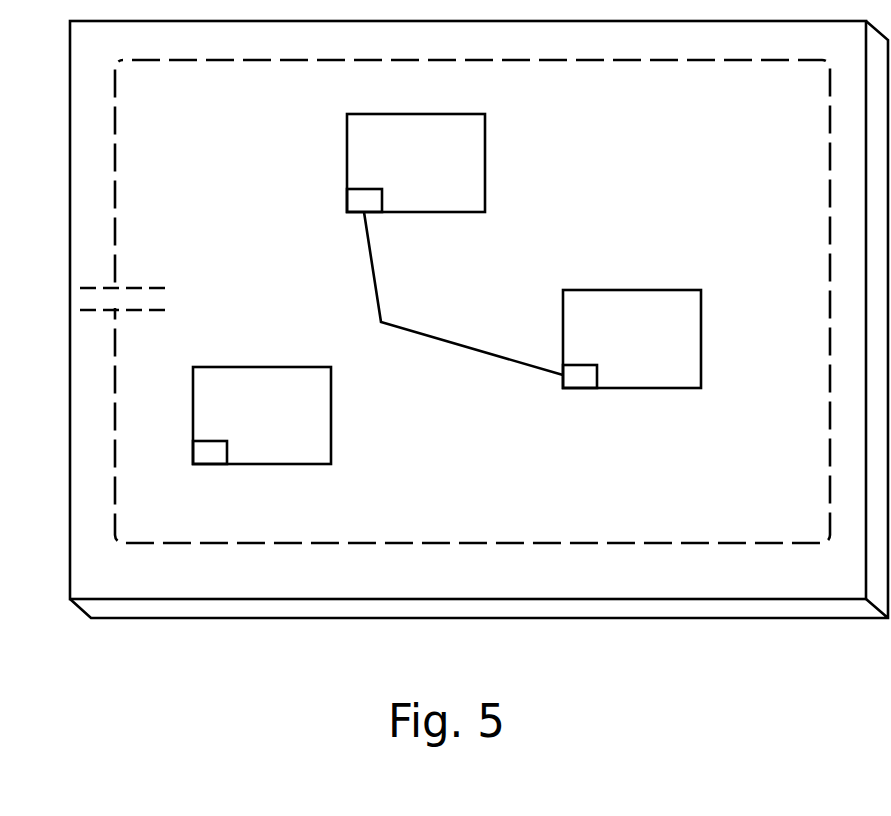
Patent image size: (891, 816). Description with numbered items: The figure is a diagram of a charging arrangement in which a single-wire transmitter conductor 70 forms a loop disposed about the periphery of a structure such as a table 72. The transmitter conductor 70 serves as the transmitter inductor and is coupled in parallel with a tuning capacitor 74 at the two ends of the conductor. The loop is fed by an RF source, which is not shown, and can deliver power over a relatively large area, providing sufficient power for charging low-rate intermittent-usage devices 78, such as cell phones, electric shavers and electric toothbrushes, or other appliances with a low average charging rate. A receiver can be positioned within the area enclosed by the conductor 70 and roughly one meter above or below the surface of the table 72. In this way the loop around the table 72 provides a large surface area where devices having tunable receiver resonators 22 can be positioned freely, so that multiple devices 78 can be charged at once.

The tunable receiver resonator 22 is at (330, 343).
The single-wire transmitter conductor 70 is at (313, 543).
The table 72 is at (515, 584).
The tuning capacitor 74 is at (130, 288).
The low-rate intermittent-usage device 78 is at (400, 176).